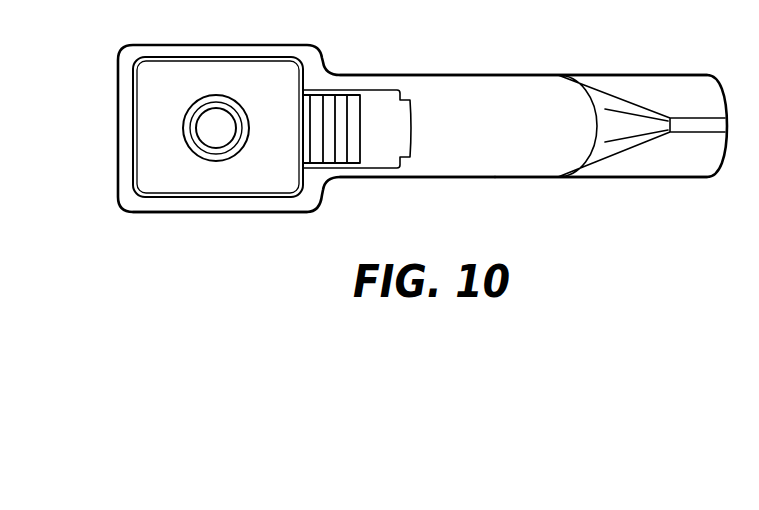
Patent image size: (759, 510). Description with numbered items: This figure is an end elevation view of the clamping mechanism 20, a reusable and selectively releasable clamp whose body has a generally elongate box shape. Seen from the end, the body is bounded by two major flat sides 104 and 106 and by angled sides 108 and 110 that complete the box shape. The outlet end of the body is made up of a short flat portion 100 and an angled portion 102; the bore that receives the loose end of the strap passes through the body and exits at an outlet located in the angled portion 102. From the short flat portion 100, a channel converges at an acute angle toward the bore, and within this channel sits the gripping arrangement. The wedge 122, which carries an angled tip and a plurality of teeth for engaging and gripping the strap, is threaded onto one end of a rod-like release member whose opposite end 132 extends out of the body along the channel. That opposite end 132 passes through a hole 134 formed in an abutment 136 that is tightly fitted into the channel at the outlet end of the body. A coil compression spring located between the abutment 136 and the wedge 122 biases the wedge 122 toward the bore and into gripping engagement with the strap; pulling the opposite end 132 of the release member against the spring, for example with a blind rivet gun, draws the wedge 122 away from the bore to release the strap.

The clamping mechanism 20 is at (568, 211).
The short flat portion 100 is at (178, 202).
The angled portion 102 is at (452, 170).
The major flat side 104 is at (418, 75).
The major flat side 106 is at (495, 177).
The angled side 108 is at (118, 98).
The angled side 110 is at (727, 147).
The wedge 122 is at (355, 128).
The opposite end 132 is at (215, 137).
The hole 134 is at (217, 95).
The abutment 136 is at (143, 163).